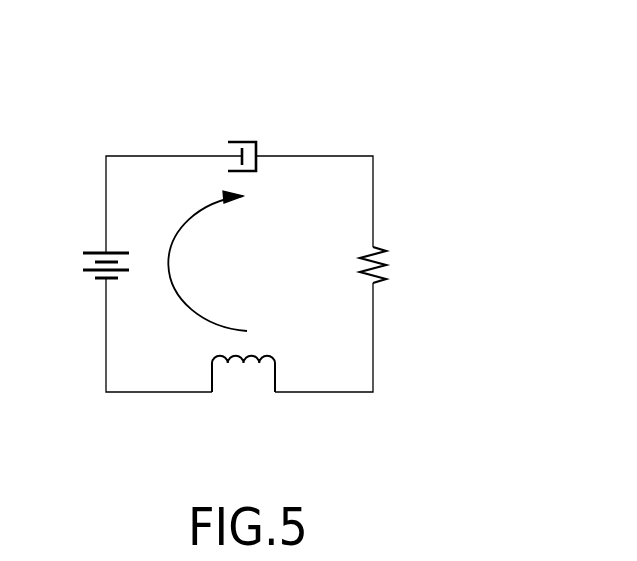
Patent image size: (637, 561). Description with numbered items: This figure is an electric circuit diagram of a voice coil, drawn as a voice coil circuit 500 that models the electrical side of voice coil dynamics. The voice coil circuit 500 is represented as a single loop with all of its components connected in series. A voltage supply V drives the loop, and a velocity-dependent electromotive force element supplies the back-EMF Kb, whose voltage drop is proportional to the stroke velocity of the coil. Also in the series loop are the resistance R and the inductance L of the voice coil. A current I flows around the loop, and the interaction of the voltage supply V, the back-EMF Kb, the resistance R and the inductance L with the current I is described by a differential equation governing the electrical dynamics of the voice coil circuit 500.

The voice coil circuit 500 is at (293, 216).
The voltage supply V is at (92, 263).
The back-EMF Kb is at (245, 137).
The current I is at (207, 261).
The resistance R is at (386, 265).
The inductance L is at (243, 390).